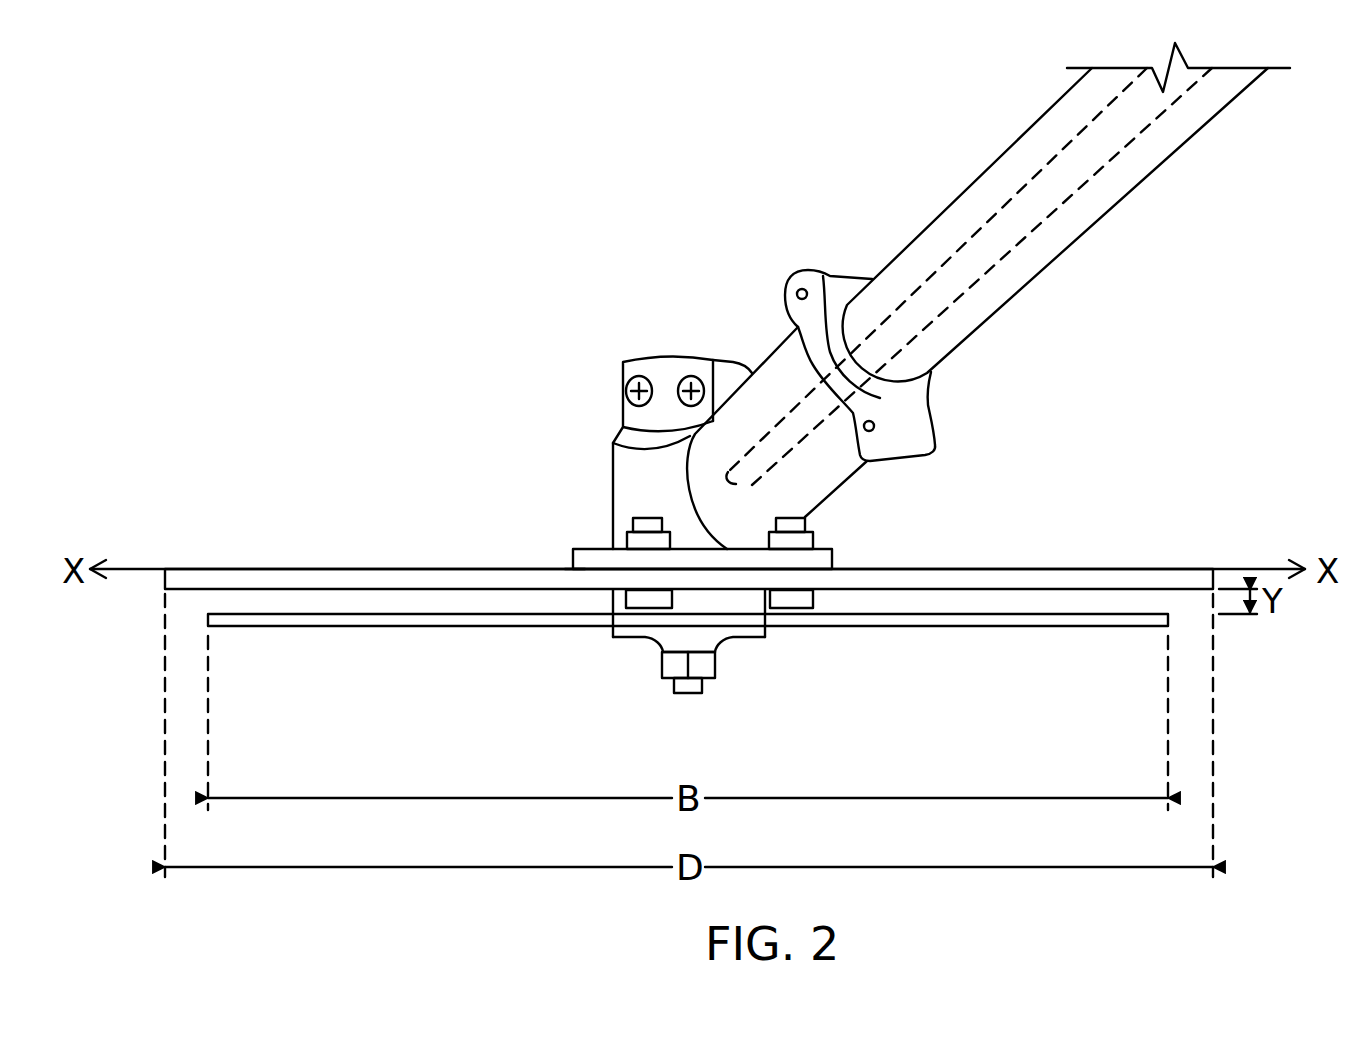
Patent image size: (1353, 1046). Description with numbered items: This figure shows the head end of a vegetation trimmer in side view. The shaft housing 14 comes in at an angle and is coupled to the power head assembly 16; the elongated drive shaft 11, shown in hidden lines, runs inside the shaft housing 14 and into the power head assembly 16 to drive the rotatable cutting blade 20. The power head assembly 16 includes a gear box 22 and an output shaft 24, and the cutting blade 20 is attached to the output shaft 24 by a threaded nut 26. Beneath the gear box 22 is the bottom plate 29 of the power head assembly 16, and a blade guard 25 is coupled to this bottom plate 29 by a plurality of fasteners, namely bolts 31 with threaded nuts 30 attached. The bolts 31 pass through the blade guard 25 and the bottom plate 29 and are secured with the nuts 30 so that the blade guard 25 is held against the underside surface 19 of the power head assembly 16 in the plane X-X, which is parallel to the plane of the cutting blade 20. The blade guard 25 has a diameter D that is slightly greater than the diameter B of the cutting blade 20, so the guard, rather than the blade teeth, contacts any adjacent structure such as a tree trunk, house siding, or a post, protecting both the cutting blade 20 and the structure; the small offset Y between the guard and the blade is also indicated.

The drive shaft 11 is at (1007, 240).
The shaft housing 14 is at (1082, 212).
The power head assembly 16 is at (684, 309).
The underside surface 19 is at (578, 573).
The cutting blade 20 is at (915, 628).
The gear box 22 is at (608, 478).
The output shaft 24 is at (688, 683).
The blade guard 25 is at (1080, 563).
The threaded nut 26 is at (662, 663).
The bottom plate 29 is at (833, 563).
The threaded nuts 30 is at (643, 542).
The bolts 31 is at (640, 599).